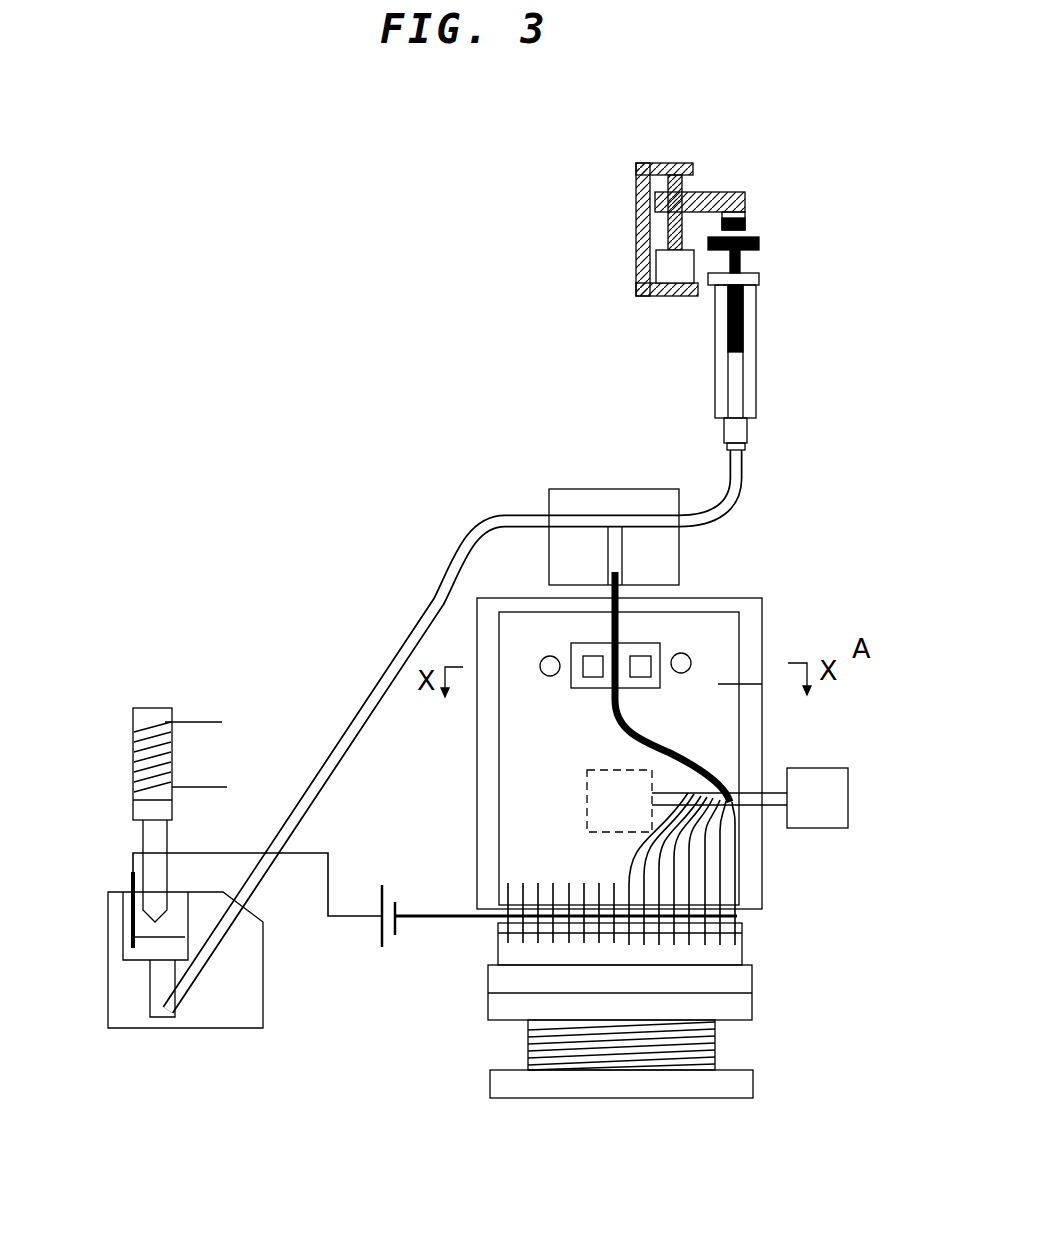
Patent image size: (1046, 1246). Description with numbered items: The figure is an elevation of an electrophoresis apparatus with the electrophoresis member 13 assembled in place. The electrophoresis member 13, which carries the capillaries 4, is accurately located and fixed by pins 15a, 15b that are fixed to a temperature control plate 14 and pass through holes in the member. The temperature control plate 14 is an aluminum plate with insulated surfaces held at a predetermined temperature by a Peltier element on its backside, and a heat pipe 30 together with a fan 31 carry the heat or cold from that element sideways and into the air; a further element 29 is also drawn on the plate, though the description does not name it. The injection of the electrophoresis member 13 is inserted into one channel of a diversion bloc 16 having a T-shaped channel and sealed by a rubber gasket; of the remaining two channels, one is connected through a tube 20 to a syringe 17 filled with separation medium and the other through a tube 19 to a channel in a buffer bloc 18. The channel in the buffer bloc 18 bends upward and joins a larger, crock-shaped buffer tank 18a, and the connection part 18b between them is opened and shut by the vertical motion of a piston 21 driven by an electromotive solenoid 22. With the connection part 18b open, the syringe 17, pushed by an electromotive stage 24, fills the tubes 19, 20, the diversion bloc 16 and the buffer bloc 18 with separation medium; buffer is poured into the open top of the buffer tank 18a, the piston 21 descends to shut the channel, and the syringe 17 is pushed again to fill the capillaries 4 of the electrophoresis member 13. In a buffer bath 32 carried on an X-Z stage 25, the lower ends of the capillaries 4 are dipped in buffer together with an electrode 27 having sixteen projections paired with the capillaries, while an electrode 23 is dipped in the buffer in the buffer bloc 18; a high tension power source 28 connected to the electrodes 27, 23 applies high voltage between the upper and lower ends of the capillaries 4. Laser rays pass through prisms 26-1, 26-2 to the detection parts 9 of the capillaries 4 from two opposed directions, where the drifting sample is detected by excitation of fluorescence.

The capillaries 4 is at (700, 598).
The detection parts 9 is at (612, 690).
The electrophoresis member 13 is at (765, 748).
The temperature control plate 14 is at (762, 683).
The pin 15a is at (540, 666).
The pin 15b is at (690, 660).
The diversion bloc 16 is at (573, 489).
The syringe 17 is at (756, 320).
The buffer bloc 18 is at (202, 1020).
The buffer tank 18a is at (125, 920).
The connection part 18b is at (143, 963).
The tube 19 is at (427, 603).
The tube 20 is at (748, 462).
The piston 21 is at (150, 832).
The electromotive solenoid 22 is at (133, 742).
The electrode 23 is at (133, 873).
The electromotive stage 24 is at (636, 218).
The X-Z stage 25 is at (747, 1007).
The prism 26-1 is at (593, 667).
The prism 26-2 is at (645, 663).
The electrode 27 is at (467, 920).
The high tension power source 28 is at (387, 947).
The control unit 29 is at (600, 803).
The heat pipe 30 is at (775, 805).
The fan 31 is at (840, 807).
The buffer bath 32 is at (742, 947).